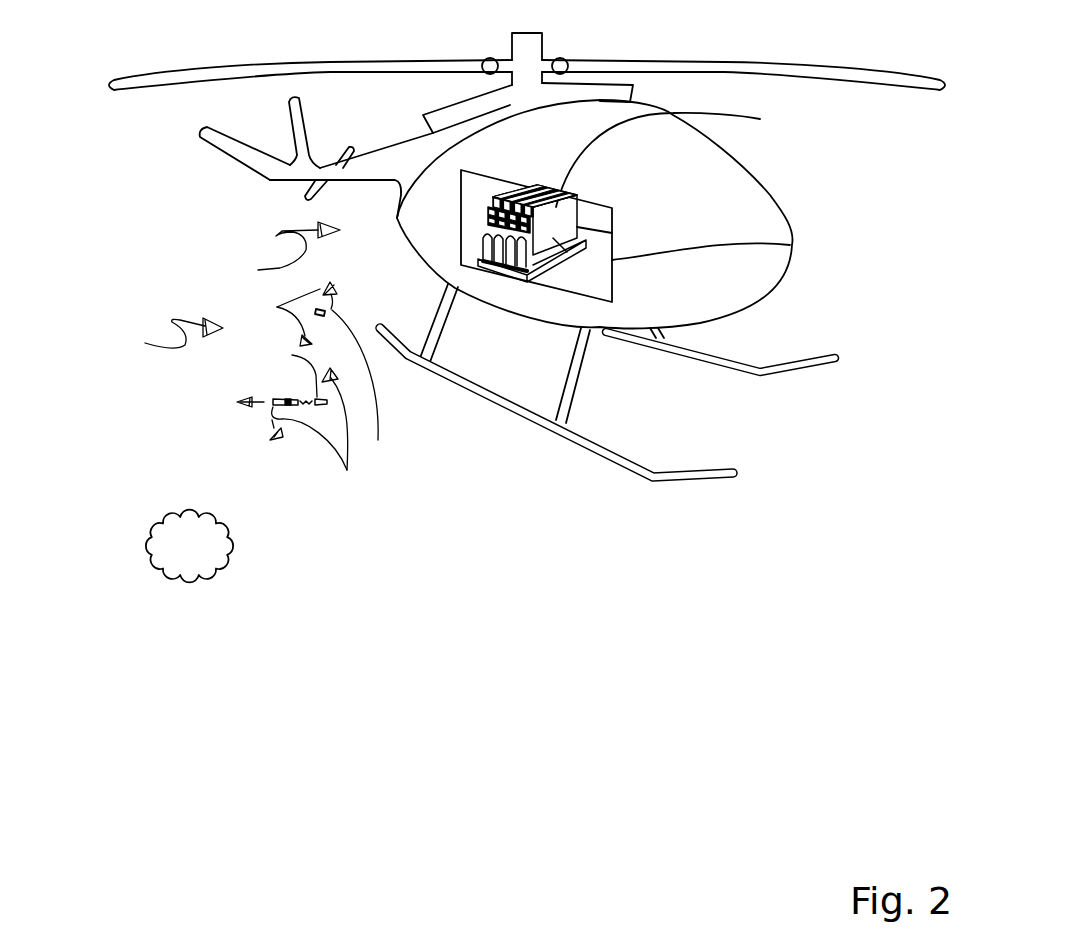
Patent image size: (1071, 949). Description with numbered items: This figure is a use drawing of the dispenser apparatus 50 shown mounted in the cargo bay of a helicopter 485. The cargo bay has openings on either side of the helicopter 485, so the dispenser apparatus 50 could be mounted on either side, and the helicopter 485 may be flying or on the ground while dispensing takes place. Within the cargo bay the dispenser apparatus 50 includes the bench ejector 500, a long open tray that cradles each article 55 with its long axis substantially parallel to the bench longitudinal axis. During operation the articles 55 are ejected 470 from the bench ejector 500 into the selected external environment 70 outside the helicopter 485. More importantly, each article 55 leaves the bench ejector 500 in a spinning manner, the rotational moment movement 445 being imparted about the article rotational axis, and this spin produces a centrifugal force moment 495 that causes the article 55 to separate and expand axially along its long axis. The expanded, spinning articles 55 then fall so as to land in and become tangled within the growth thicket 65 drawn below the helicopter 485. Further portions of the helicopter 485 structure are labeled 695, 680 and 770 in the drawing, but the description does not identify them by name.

The external environment 70 is at (899, 202).
The windshield 695 is at (760, 119).
The floor 680 is at (790, 245).
The helicopter 485 is at (739, 225).
The access opening 770 is at (461, 222).
The bench ejector 500 is at (525, 270).
The dispenser apparatus 50 is at (283, 254).
The rotational moment movement 445 is at (298, 392).
The ejecting 470 is at (126, 340).
The centrifugal force moment 495 is at (254, 402).
The article 55 is at (325, 390).
The growth thicket 65 is at (207, 558).